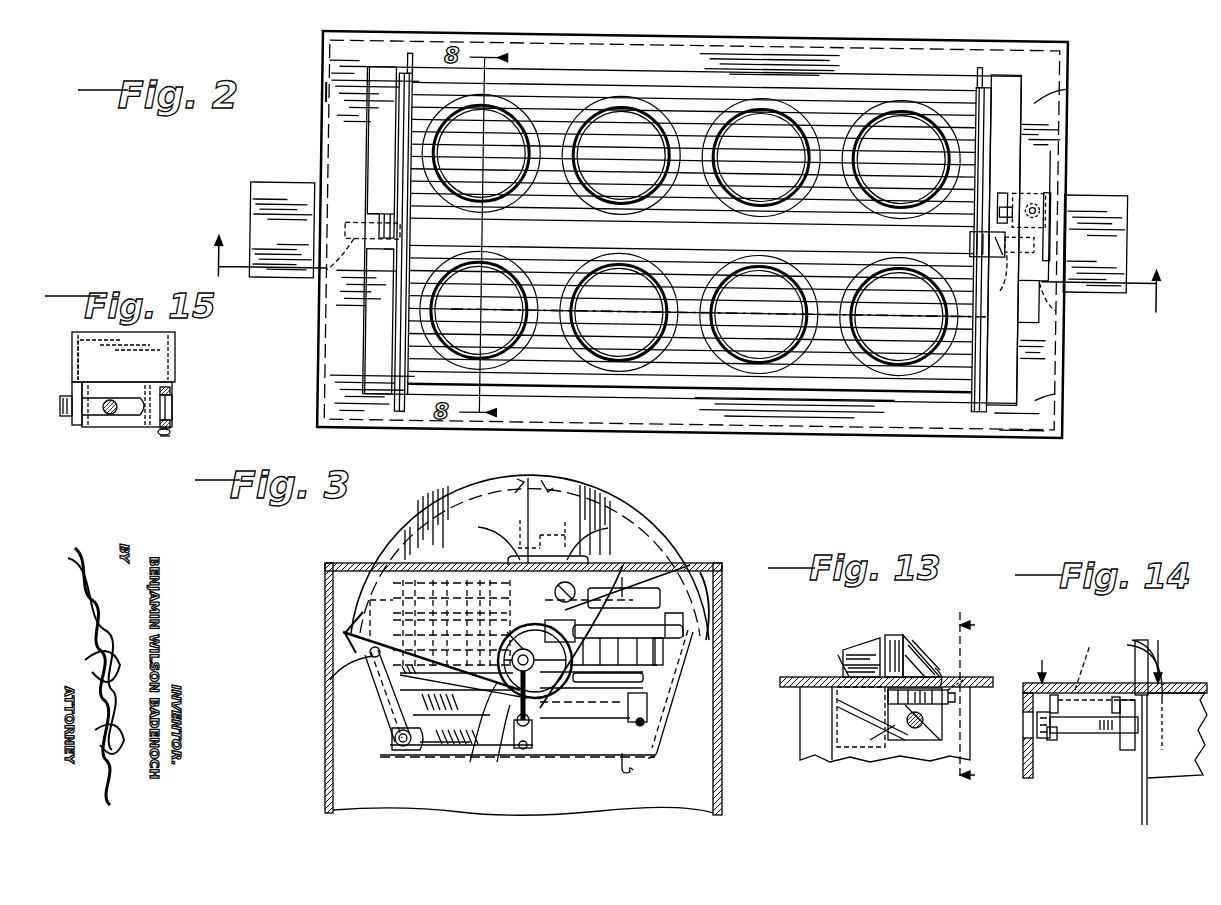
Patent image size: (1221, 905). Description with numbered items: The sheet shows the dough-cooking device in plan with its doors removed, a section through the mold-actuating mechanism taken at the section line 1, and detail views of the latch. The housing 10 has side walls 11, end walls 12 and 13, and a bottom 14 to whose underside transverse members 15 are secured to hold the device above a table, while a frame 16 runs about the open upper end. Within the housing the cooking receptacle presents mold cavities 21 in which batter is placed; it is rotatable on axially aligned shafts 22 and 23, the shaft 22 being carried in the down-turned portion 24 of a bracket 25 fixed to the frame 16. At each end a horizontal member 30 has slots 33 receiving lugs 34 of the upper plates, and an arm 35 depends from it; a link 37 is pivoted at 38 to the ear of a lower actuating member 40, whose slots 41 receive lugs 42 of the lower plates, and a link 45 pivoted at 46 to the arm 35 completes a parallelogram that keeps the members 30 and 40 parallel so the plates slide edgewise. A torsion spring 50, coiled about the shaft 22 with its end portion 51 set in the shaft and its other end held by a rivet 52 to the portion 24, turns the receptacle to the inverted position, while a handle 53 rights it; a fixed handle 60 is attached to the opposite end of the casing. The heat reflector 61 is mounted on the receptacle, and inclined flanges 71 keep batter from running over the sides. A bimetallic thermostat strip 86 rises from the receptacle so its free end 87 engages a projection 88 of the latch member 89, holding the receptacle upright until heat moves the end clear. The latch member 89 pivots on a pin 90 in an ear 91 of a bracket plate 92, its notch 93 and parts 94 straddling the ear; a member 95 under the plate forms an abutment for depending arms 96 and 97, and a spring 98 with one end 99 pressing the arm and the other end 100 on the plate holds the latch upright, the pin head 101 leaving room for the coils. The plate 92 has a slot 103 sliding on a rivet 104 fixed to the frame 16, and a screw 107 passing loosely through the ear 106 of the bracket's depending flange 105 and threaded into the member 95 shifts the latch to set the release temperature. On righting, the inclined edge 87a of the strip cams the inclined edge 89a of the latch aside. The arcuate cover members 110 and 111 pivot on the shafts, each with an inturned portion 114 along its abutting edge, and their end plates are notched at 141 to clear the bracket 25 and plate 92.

In FIG. 2, the section line 1- 1 is at (697, 260).
In FIG. 2, the housing 10 is at (890, 436).
In FIG. 2, the side walls 11 is at (948, 34).
In FIG. 3, the side walls 11 is at (325, 620).
In FIG. 2, the wall 12 is at (1068, 378).
In FIG. 2, the wall 13 is at (327, 91).
In FIG. 13, the bottom 14 is at (982, 703).
In FIG. 14, the transversely extending members 15 is at (1109, 654).
In FIG. 2, the frame 16 is at (1068, 72).
In FIG. 2, the mold cavities 21 is at (926, 343).
In FIG. 2, the shaft 22 is at (1012, 272).
In FIG. 3, the shaft 22 is at (548, 712).
In FIG. 2, the shaft 23 is at (330, 283).
In FIG. 15, the down-turn portion 24 is at (168, 350).
In FIG. 13, the down-turn portion 24 is at (832, 738).
In FIG. 14, the down-turn portion 24 is at (1147, 800).
In FIG. 2, the bracket 25 is at (1058, 285).
In FIG. 15, the bracket 25 is at (85, 345).
In FIG. 13, the bracket 25 is at (850, 690).
In FIG. 14, the bracket 25 is at (1096, 668).
In FIG. 3, the horizontal member 30 is at (622, 580).
In FIG. 3, the slots 33 is at (632, 575).
In FIG. 3, the lugs 34 is at (708, 566).
In FIG. 3, the arm 35 is at (420, 748).
In FIG. 3, the link 37 is at (500, 750).
In FIG. 3, the pivot 38 is at (400, 748).
In FIG. 3, the lower actuating member 40 is at (645, 723).
In FIG. 3, the slots 41 is at (647, 706).
In FIG. 3, the lugs 42 is at (398, 700).
In FIG. 3, the link 45 is at (340, 668).
In FIG. 3, the pivot 46 is at (370, 652).
In FIG. 3, the spring 50 is at (536, 694).
In FIG. 3, the end portion 51 is at (542, 669).
In FIG. 3, the rivet 52 is at (528, 752).
In FIG. 2, the handle 53 is at (292, 182).
In FIG. 2, the fixed handle 60 is at (1108, 282).
In FIG. 3, the heating shield or reflector 61 is at (638, 767).
In FIG. 3, the flanges 71 is at (345, 590).
In FIG. 3, the bimetallic thermostatic strip 86 is at (519, 528).
In FIG. 14, the bimetallic thermostatic strip 86 is at (1162, 668).
In FIG. 2, the free end 87 is at (973, 233).
In FIG. 13, the free end 87 is at (838, 655).
In FIG. 13, the inclined edge 87a is at (870, 638).
In FIG. 2, the projection 88 is at (1002, 195).
In FIG. 13, the projection 88 is at (893, 635).
In FIG. 3, the latch member 89 is at (552, 528).
In FIG. 13, the latch member 89 is at (935, 668).
In FIG. 14, the latch member 89 is at (1141, 640).
In FIG. 13, the inclined edge 89a is at (930, 640).
In FIG. 15, the pin 90 is at (170, 432).
In FIG. 13, the pin 90 is at (963, 680).
In FIG. 15, the ear 91 is at (172, 405).
In FIG. 14, the ear 91 is at (1066, 695).
In FIG. 2, the bracket plate 92 is at (1040, 183).
In FIG. 15, the bracket plate 92 is at (135, 420).
In FIG. 15, the notch 93 is at (172, 400).
In FIG. 13, the notch 93 is at (920, 690).
In FIG. 15, the parts 94 is at (170, 390).
In FIG. 14, the member 95 is at (1126, 740).
In FIG. 13, the depending arm 96 is at (942, 735).
In FIG. 13, the depending arm 97 is at (880, 738).
In FIG. 13, the spring 98 is at (950, 710).
In FIG. 14, the spring end 99 is at (1150, 690).
In FIG. 14, the spring end 100 is at (1117, 697).
In FIG. 15, the head 101 is at (168, 436).
In FIG. 13, the head 101 is at (955, 697).
In FIG. 15, the slot 103 is at (90, 404).
In FIG. 15, the rivet 104 is at (110, 415).
In FIG. 14, the rivet 104 is at (1080, 733).
In FIG. 3, the depending flange 105 is at (500, 560).
In FIG. 13, the depending flange 105 is at (845, 704).
In FIG. 13, the ear 106 is at (912, 728).
In FIG. 14, the ear 106 is at (1052, 740).
In FIG. 13, the screw 107 is at (918, 740).
In FIG. 14, the screw 107 is at (1068, 740).
In FIG. 3, the cover member 110 is at (600, 494).
In FIG. 3, the cover member 111 is at (462, 497).
In FIG. 3, the inturned portion 114 is at (522, 478).
In FIG. 3, the notch 141 is at (546, 558).